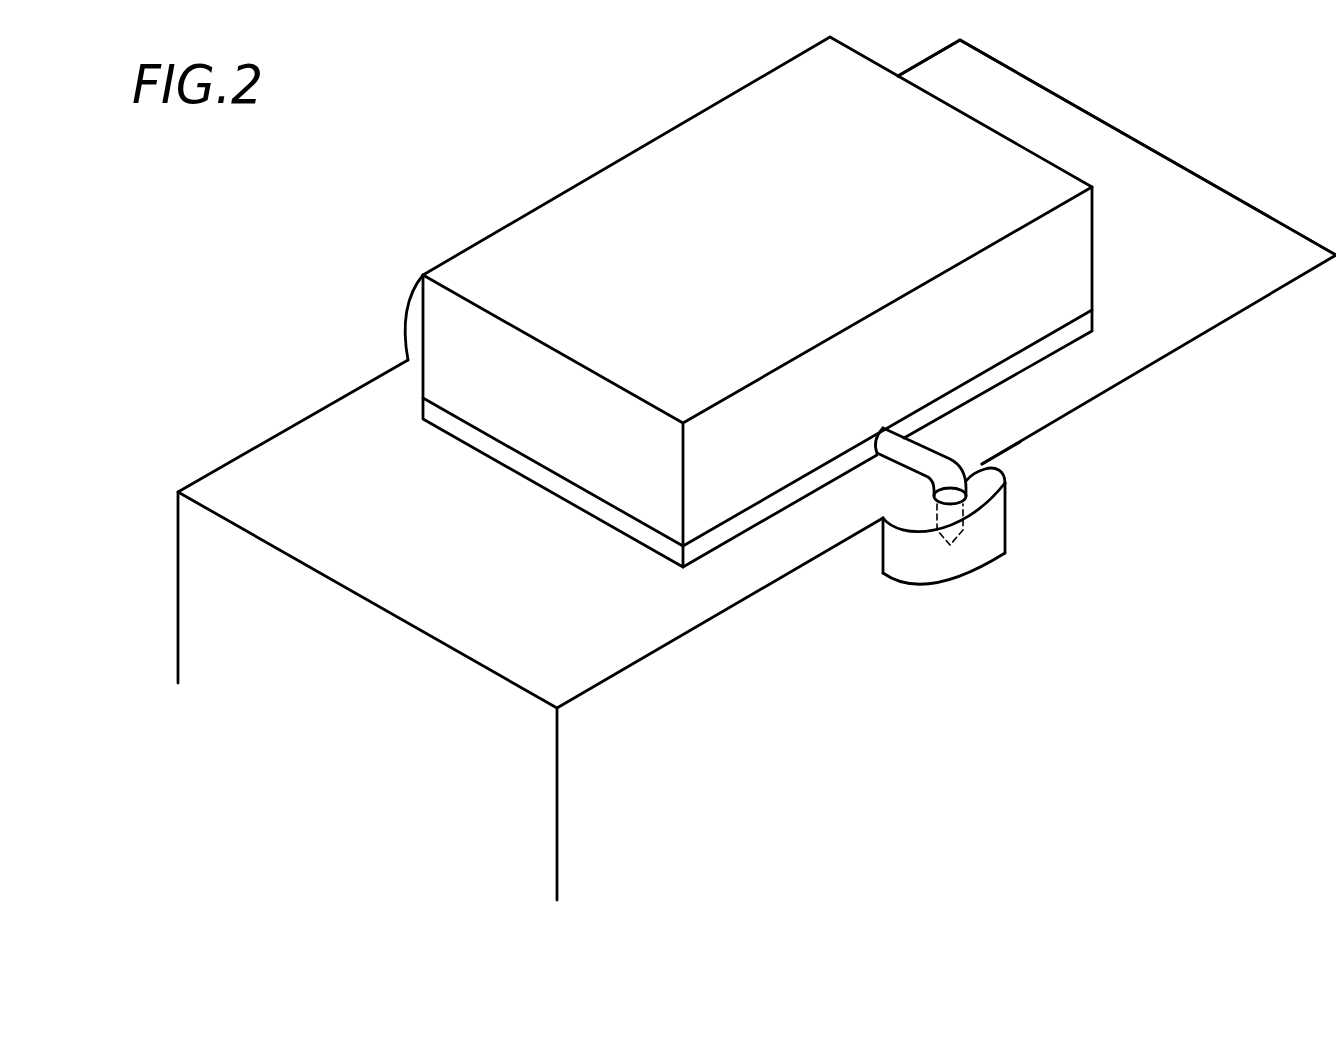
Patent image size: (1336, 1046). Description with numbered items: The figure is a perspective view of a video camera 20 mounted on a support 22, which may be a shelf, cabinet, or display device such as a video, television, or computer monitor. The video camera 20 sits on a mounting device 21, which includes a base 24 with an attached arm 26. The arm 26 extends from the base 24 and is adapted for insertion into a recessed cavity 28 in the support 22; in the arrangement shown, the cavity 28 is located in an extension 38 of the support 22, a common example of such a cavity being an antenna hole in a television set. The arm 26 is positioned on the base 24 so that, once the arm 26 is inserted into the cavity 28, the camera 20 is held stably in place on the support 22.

The video camera 20 is at (970, 113).
The mounting device 21 is at (743, 535).
The support 22 is at (280, 430).
The base 24 is at (423, 403).
The arm 26 is at (948, 460).
The recessed cavity 28 is at (984, 468).
The extension 38 is at (963, 580).